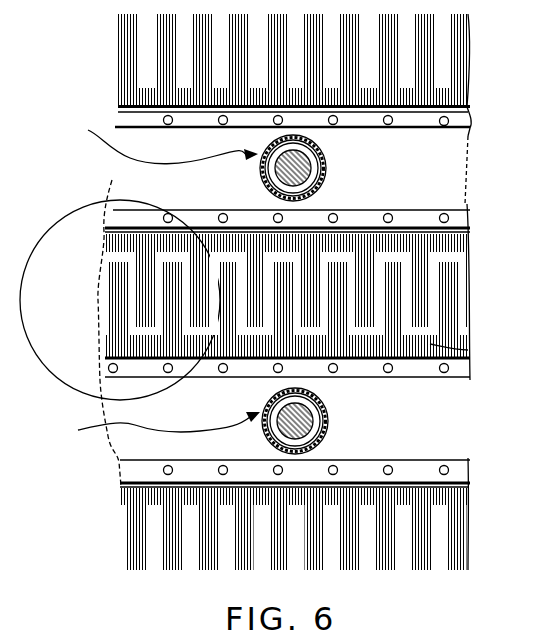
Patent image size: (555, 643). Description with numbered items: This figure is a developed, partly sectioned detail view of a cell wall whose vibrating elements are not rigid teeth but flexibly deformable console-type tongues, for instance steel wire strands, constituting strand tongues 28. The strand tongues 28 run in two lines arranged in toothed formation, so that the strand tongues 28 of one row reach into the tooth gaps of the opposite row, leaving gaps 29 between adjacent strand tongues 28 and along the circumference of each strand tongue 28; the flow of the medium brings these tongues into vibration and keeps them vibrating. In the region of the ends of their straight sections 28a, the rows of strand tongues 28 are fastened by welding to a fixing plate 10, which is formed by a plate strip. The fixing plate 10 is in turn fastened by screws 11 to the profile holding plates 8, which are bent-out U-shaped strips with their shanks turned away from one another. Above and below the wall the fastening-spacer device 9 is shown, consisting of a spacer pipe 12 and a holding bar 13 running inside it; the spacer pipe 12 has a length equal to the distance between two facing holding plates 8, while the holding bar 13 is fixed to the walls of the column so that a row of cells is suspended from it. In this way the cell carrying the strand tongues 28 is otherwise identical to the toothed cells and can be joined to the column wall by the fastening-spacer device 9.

The holding plate 8 is at (425, 435).
The fastening-spacer device 9 is at (160, 280).
The fixing plate 10 is at (118, 221).
The screw 11 is at (126, 498).
The spacer pipe 12 is at (332, 156).
The holding bar 13 is at (310, 169).
The strand tongue 28 is at (170, 257).
The straight section 28a is at (430, 344).
The gap 29 is at (221, 258).